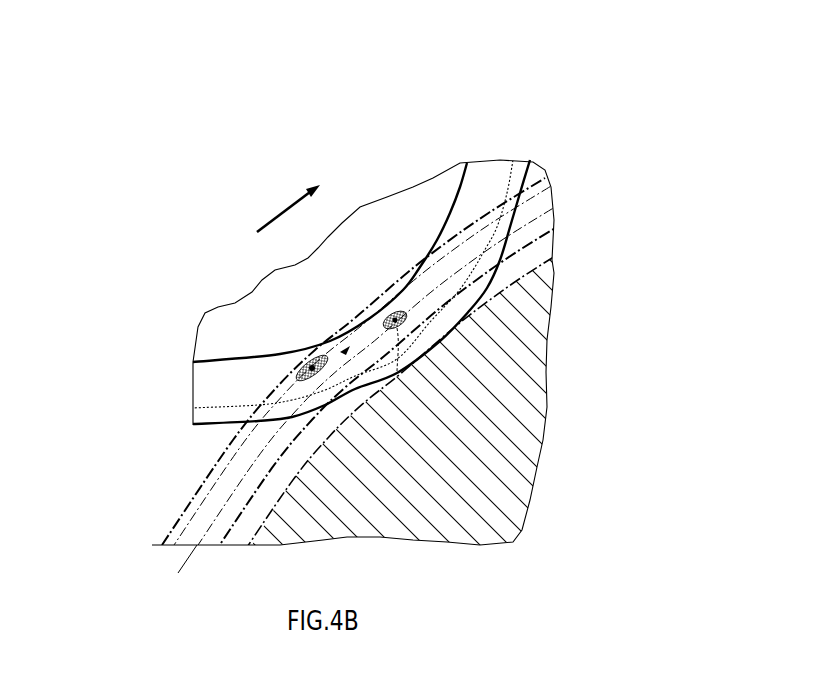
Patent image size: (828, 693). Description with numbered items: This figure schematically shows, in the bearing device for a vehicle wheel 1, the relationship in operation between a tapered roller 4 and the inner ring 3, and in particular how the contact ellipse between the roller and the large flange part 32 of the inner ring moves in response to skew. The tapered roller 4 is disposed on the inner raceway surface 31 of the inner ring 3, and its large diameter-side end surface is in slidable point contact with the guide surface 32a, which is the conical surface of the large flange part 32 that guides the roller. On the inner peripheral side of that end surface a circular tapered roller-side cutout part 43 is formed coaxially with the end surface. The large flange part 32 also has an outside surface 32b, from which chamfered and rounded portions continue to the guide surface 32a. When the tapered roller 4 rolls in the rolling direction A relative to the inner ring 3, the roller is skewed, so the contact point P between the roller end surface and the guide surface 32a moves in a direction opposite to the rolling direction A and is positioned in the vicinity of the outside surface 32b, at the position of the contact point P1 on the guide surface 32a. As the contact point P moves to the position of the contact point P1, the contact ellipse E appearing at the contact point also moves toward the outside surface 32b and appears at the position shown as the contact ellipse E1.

The laminate 1 is at (622, 103).
The inner ring 3 is at (193, 488).
The tapered roller 4 is at (533, 173).
The tapered roller-side cutout part 43 is at (463, 178).
The inner raceway surface 31 is at (548, 330).
The large flange part 32 is at (410, 268).
The guide surface 32a is at (547, 203).
The outside surface 32b is at (277, 387).
The contact ellipse E is at (391, 313).
The contact ellipse E1 is at (313, 358).
The contact point P is at (397, 373).
The contact point P1 is at (318, 378).
The rolling direction A is at (277, 207).